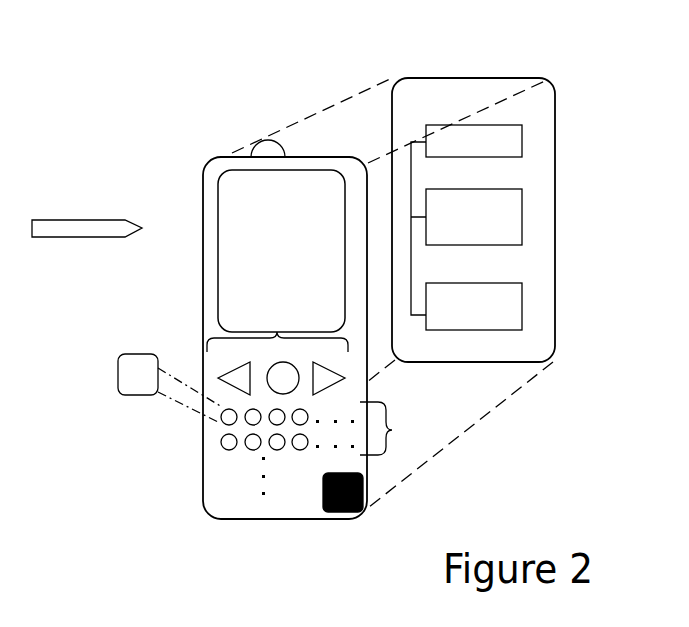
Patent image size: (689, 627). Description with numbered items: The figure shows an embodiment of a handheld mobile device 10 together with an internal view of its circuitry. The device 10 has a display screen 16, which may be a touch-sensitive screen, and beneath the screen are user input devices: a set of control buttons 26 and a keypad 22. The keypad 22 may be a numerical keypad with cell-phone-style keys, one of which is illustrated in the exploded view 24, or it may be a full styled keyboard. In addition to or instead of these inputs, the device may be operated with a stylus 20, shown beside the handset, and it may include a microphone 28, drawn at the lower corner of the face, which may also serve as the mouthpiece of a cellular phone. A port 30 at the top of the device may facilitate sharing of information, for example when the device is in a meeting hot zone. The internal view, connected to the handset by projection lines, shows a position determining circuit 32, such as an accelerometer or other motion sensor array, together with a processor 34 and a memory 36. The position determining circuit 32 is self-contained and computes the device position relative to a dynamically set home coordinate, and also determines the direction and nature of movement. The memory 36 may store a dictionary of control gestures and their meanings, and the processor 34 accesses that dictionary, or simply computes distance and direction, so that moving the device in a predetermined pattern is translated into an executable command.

The device 10 is at (523, 76).
The display screen 16 is at (220, 172).
The stylus 20 is at (42, 220).
The keypad 22 is at (393, 432).
The exploded view 24 is at (118, 386).
The control buttons 26 is at (208, 340).
The microphone 28 is at (367, 502).
The port 30 is at (267, 139).
The position determining circuit 32 is at (557, 212).
The processor 34 is at (522, 315).
The memory 36 is at (522, 147).